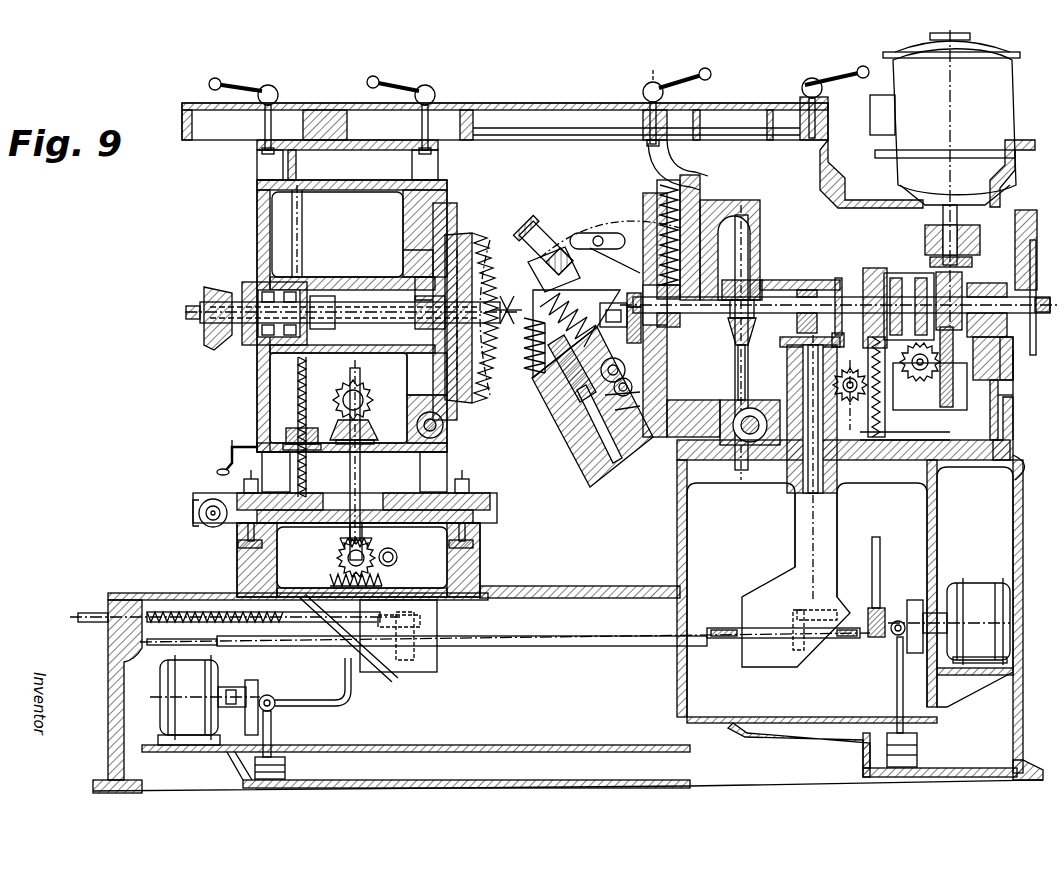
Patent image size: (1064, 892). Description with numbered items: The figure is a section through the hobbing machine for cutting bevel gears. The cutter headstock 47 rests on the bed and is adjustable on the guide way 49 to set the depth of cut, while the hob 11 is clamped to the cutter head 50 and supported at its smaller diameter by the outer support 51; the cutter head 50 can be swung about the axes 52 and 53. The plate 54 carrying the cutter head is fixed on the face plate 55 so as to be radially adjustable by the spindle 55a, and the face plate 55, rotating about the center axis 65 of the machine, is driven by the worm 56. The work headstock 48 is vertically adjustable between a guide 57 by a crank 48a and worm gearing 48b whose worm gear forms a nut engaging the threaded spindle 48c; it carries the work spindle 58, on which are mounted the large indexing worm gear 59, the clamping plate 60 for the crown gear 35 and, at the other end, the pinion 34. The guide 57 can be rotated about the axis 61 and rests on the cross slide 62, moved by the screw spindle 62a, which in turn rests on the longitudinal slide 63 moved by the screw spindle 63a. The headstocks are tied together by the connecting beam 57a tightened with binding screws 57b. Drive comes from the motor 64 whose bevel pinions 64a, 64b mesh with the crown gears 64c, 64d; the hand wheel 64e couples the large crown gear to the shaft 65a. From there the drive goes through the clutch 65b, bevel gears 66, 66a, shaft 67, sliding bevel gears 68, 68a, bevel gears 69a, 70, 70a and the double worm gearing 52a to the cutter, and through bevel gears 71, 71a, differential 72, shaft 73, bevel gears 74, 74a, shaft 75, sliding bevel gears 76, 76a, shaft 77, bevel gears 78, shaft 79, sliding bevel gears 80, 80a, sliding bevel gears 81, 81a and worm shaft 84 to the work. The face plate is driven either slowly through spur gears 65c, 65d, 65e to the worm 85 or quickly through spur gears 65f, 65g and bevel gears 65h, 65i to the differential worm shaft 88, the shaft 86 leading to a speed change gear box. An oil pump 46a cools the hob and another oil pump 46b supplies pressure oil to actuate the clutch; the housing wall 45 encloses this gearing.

The hob 11 is at (526, 350).
The pinion 34 is at (210, 290).
The crown gear 35 is at (470, 246).
The base housing 45 is at (1018, 518).
The oil pump 46a is at (262, 688).
The oil pump 46b is at (910, 600).
The cutter headstock 47 is at (1008, 428).
The work headstock 48 is at (258, 216).
The crank 48a is at (258, 446).
The worm gearing 48b is at (290, 428).
The threaded spindle 48c is at (303, 218).
The guide way 49 is at (1019, 459).
The cutter head 50 is at (566, 240).
The outer support 51 is at (537, 290).
The axis / double worm gearing 52 is at (632, 373).
The double worm gearing 52a is at (640, 404).
The axis / shaft 53 is at (625, 358).
The plate 54 is at (644, 215).
The face plate 55 is at (683, 195).
The spindle 55a is at (657, 183).
The worm / worm shaft 56 is at (748, 442).
The guide 57 is at (262, 166).
The connecting beam 57a is at (493, 105).
The binding screws 57b is at (657, 84).
The work spindle 58 is at (325, 300).
The large indexing worm gear 59 is at (455, 212).
The clamping plate / worm 60 is at (202, 503).
The axis / shaft 61 is at (358, 382).
The cross slide 62 is at (478, 514).
The screw spindle 62a is at (398, 559).
The longitudinal slide 63 is at (465, 577).
The screw spindle 63a is at (170, 624).
The motor 64 is at (617, 275).
The bevel pinion 64a is at (945, 262).
The bevel pinion 64b is at (945, 260).
The crown gear 64c is at (956, 232).
The crown gear 64d is at (942, 235).
The hand wheel 64e is at (1026, 249).
The shaft / center axis 65 is at (790, 298).
The shaft 65a is at (1024, 293).
The clutch 65b is at (905, 275).
The spur gear 65c is at (1005, 350).
The spur gear 65d is at (998, 372).
The spur gear 65e is at (998, 396).
The spur gear 65f is at (868, 272).
The spur gear 65g is at (885, 410).
The bevel gear 65h is at (875, 438).
The bevel gear 65i is at (880, 445).
The bevel gear 66 is at (740, 282).
The bevel gear 66a is at (770, 273).
The shaft 67 is at (744, 400).
The sliding bevel gear 68 is at (722, 330).
The sliding bevel gear 68a is at (745, 345).
The bevel gear 69a is at (630, 330).
The bevel gear 70 is at (600, 360).
The bevel gear 70a is at (640, 390).
The bevel gear 71 is at (836, 290).
The bevel gear 71a is at (851, 347).
The differential 72 is at (837, 462).
The shaft 73 is at (832, 480).
The bevel gear 74 is at (799, 610).
The bevel gear 74a is at (797, 613).
The shaft / crown gear 75 is at (697, 630).
The sliding bevel gear 76 is at (388, 645).
The sliding bevel gear 76a is at (388, 619).
The shaft 77 is at (355, 610).
The bevel gears 78 is at (330, 583).
The shaft 79 is at (372, 555).
The sliding bevel gear 80 is at (340, 560).
The sliding bevel gear 80a is at (338, 543).
The sliding bevel gear 81 is at (368, 420).
The sliding bevel gear 81a is at (368, 397).
The worm shaft 84 is at (444, 430).
The worm 85 is at (930, 368).
The shaft 86 is at (914, 359).
The differential worm shaft 88 is at (853, 395).